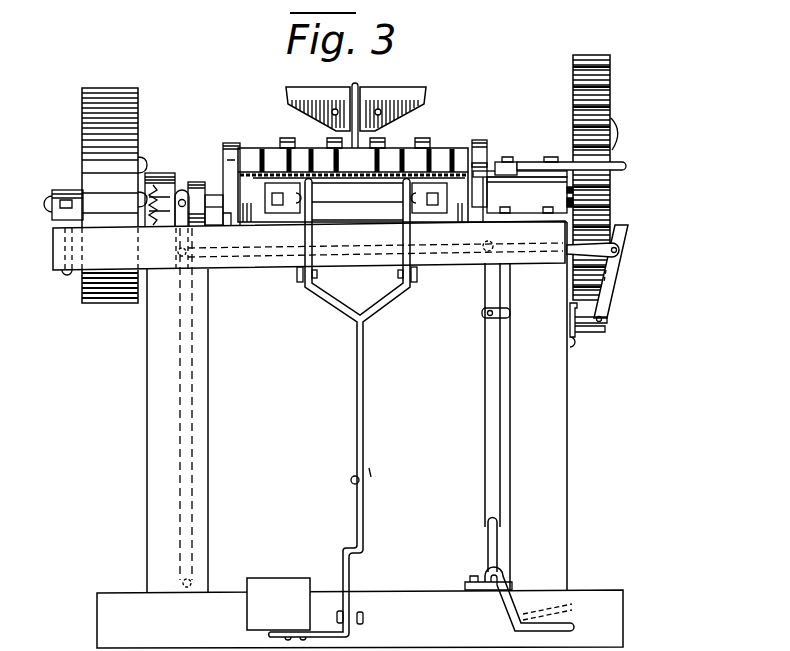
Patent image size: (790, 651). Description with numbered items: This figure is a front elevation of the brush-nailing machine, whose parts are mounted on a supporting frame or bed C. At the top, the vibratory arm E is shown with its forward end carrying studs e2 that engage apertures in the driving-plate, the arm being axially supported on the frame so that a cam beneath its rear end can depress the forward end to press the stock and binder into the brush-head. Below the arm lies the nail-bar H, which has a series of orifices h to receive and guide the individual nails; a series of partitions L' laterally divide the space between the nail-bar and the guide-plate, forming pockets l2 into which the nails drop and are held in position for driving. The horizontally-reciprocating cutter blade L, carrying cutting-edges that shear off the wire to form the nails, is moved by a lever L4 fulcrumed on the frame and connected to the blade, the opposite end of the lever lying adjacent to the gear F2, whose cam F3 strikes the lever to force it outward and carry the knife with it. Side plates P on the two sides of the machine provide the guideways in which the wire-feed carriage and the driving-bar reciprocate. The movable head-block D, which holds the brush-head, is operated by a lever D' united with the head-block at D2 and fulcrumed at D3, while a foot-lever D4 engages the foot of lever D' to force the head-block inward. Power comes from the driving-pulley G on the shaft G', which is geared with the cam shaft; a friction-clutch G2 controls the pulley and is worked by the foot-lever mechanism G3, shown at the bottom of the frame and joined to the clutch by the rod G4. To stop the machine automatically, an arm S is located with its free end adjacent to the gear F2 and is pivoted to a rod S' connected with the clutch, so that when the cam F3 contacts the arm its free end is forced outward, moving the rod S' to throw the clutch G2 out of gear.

The driving-pulley G is at (104, 195).
The friction-clutch G2 is at (167, 190).
The shaft G' is at (199, 215).
The side plate P is at (492, 140).
The pocket l2 is at (450, 152).
The partition L' is at (357, 160).
The orifice h is at (336, 176).
The nail-bar H is at (353, 174).
The vibratory arm E is at (370, 107).
The stud e2 is at (333, 113).
The union of lever and head-block D2 is at (356, 196).
The movable head-block D is at (357, 201).
The supporting frame C is at (338, 434).
The shaft G4 is at (370, 253).
The rod S' is at (213, 407).
The operating-lever D' is at (339, 410).
The fulcrum D3 is at (354, 278).
The foot-lever D4 is at (288, 604).
The cutter blade L is at (520, 181).
The gear F2 is at (602, 177).
The lever L4 is at (568, 165).
The cam F3 is at (609, 197).
The arm S is at (600, 286).
The foot-lever mechanism G3 is at (531, 451).